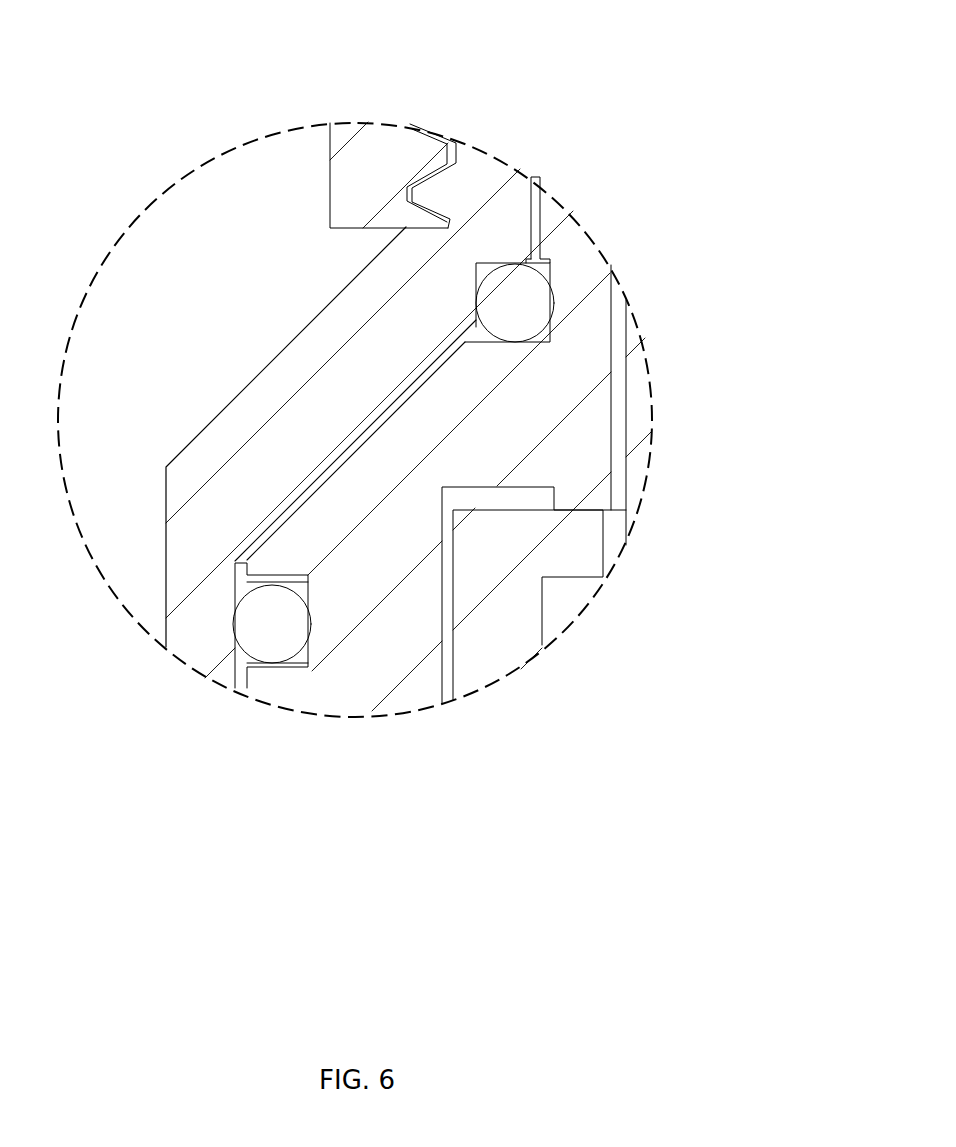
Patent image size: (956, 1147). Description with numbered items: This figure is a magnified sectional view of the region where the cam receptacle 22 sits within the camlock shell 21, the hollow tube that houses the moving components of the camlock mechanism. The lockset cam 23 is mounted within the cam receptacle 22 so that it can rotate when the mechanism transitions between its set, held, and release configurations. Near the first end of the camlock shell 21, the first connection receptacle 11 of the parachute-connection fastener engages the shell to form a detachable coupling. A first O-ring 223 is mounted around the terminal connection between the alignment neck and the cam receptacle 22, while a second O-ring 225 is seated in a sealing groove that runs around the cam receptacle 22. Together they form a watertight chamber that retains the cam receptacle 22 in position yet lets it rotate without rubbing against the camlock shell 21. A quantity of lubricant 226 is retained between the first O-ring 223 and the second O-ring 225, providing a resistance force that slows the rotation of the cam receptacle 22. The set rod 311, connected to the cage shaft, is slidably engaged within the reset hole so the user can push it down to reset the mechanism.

The first connection receptacle 11 is at (401, 142).
The camlock shell 21 is at (250, 413).
The cam receptacle 22 is at (416, 690).
The lockset cam 23 is at (507, 658).
The first O-ring 223 is at (527, 305).
The second O-ring 225 is at (275, 638).
The quantity of lubricant 226 is at (382, 420).
The set rod 311 is at (643, 404).